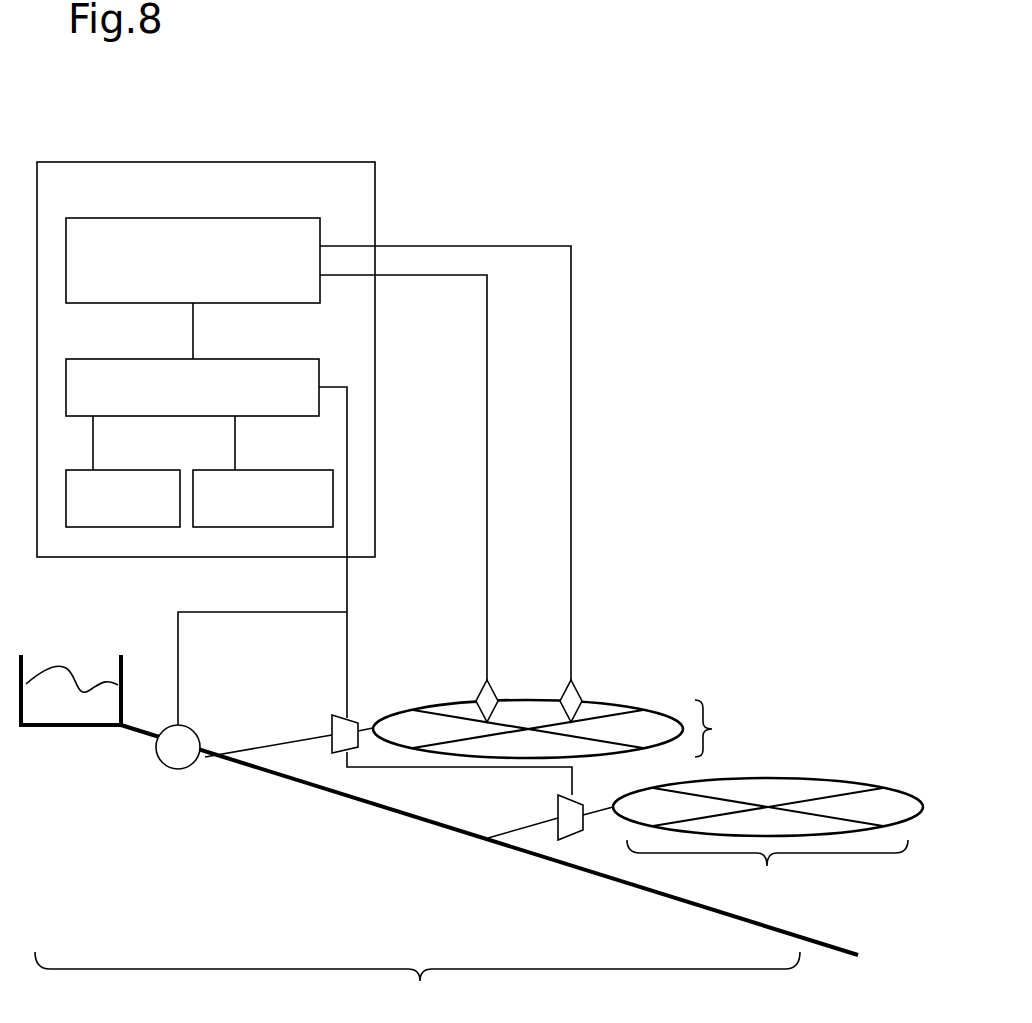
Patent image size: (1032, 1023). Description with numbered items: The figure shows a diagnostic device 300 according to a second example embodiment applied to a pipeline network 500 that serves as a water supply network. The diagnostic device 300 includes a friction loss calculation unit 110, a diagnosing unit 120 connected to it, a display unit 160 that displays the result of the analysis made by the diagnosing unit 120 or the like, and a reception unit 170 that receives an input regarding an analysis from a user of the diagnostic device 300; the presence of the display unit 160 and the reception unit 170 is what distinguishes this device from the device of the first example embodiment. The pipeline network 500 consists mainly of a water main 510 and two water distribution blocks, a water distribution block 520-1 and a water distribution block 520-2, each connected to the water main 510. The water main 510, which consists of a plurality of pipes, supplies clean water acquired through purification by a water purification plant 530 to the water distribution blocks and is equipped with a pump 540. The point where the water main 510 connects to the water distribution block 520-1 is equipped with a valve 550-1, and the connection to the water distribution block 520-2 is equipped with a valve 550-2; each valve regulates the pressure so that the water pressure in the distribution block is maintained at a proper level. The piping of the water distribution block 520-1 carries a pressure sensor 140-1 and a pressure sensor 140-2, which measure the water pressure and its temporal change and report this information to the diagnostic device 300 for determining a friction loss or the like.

The diagnostic device 300 is at (207, 162).
The friction loss calculation unit 110 is at (212, 218).
The diagnosing unit 120 is at (212, 359).
The display unit 160 is at (112, 470).
The reception unit 170 is at (252, 470).
The pipeline network 500 is at (417, 981).
The water main 510 is at (385, 812).
The water distribution block 520-1 is at (589, 729).
The water distribution block 520-2 is at (768, 837).
The water purification plant 530 is at (77, 728).
The pump 540 is at (182, 770).
The valve 550-1 is at (330, 716).
The valve 550-2 is at (557, 812).
The pressure sensor 140-1 is at (477, 686).
The pressure sensor 140-2 is at (579, 686).